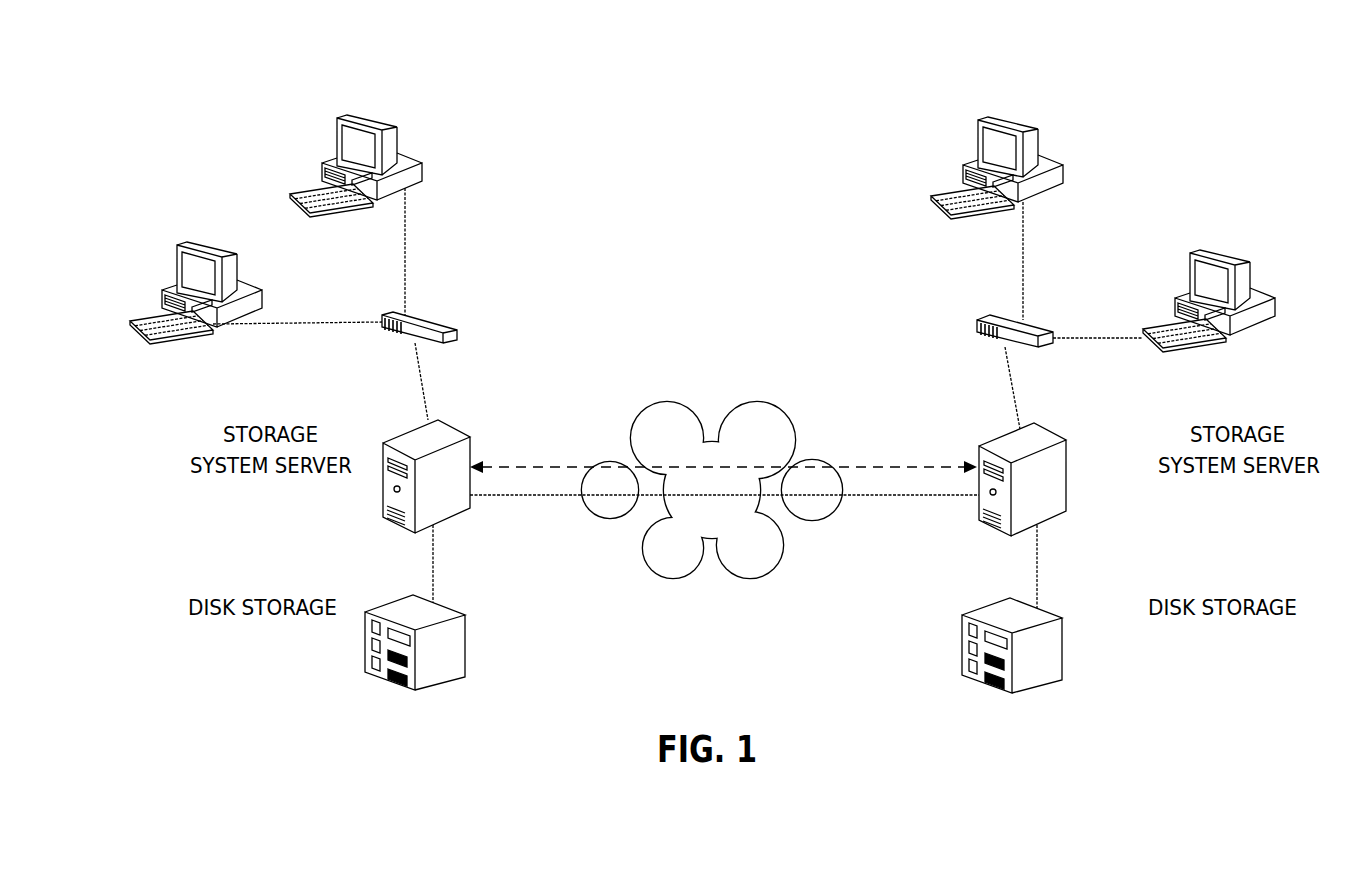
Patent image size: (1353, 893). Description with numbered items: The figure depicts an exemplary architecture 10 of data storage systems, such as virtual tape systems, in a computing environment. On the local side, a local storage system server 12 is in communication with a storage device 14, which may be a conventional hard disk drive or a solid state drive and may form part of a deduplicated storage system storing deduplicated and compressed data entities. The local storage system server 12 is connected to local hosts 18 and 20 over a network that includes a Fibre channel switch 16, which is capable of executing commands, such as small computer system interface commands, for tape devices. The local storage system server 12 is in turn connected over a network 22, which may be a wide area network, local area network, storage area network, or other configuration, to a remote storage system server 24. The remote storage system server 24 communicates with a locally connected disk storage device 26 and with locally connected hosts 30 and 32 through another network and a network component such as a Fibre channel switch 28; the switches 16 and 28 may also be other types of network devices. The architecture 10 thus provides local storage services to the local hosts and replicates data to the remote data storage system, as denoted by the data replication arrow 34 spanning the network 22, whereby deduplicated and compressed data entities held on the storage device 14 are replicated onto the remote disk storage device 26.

The architecture 10 is at (1217, 88).
The local storage system server 12 is at (450, 424).
The storage device 14 is at (465, 645).
The Fibre channel switch 16 is at (421, 322).
The local host 18 is at (240, 272).
The local host 20 is at (400, 142).
The network 22 is at (785, 420).
The remote storage system server 24 is at (1067, 482).
The disk storage device 26 is at (1062, 650).
The Fibre channel switch 28 is at (998, 320).
The host 30 is at (1040, 142).
The host 32 is at (1257, 278).
The data replication 34 is at (862, 466).